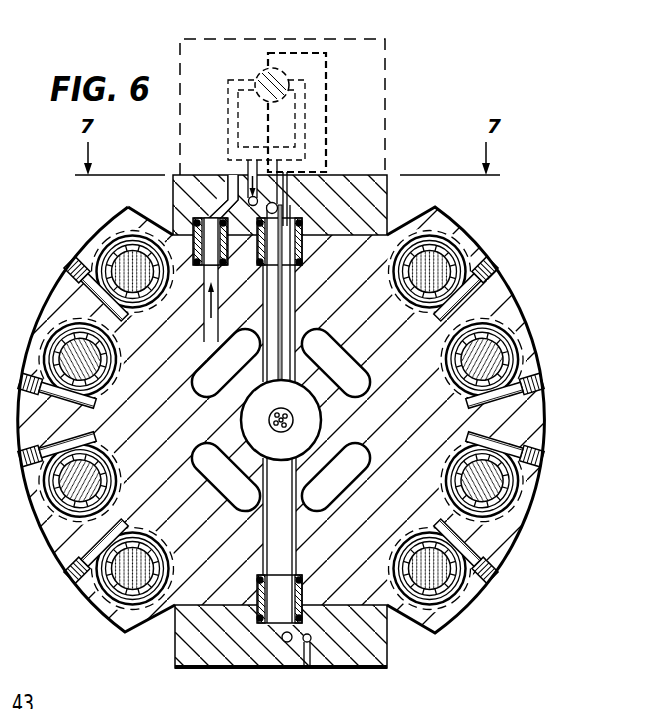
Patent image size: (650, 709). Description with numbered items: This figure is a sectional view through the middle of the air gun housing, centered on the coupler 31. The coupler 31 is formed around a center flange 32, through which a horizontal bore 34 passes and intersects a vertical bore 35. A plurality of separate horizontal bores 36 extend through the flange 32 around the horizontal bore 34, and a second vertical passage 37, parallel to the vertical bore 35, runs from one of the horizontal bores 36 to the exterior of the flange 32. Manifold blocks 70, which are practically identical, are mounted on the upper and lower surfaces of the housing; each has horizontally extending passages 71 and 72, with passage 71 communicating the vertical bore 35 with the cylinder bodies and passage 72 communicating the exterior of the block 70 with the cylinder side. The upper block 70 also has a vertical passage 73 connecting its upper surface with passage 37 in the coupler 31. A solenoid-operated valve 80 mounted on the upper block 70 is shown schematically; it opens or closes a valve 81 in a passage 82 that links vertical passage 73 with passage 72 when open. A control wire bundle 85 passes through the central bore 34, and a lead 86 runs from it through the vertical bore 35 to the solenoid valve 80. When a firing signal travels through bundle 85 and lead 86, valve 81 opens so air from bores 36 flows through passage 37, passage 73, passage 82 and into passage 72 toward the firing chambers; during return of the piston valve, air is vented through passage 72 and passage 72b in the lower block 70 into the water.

The coupler 31 is at (512, 262).
The center flange 32 is at (289, 419).
The horizontal bore 34 is at (308, 447).
The vertical bore 35 is at (297, 322).
The horizontal bores 36 is at (204, 380).
The second vertical passage 37 is at (222, 318).
The manifold blocks 70 is at (388, 208).
The passage 71 is at (278, 204).
The passage 72 is at (251, 172).
The passage 72b is at (310, 662).
The vertical passage 73 is at (233, 196).
The solenoid-operated valve 80 is at (386, 124).
The valve 81 is at (267, 68).
The passage 82 is at (316, 102).
The control wire bundle 85 is at (272, 424).
The lead 86 is at (290, 276).